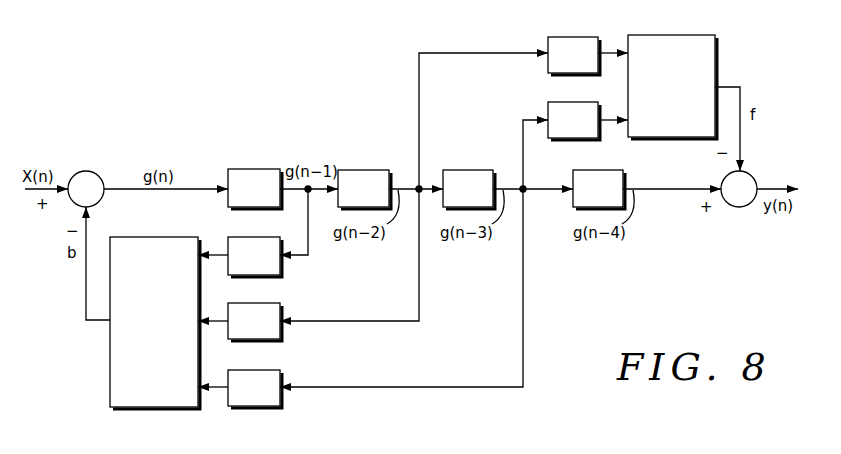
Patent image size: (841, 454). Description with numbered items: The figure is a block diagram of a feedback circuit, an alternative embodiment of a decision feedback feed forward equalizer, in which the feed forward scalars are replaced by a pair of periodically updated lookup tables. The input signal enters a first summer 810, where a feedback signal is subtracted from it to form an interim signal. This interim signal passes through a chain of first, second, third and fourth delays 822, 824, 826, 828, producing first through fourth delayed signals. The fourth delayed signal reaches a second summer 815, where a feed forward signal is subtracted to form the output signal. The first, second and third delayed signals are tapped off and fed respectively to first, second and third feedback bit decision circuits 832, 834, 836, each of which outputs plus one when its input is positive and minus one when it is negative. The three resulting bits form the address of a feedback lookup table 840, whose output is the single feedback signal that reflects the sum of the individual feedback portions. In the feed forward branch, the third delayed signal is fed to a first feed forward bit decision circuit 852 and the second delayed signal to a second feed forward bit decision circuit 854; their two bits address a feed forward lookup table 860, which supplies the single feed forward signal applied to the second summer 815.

The first summer 810 is at (99, 174).
The second summer 815 is at (741, 208).
The first delay 822 is at (246, 169).
The second delay 824 is at (357, 170).
The third delay 826 is at (463, 170).
The fourth delay 828 is at (600, 170).
The first feedback bit decision circuit 832 is at (246, 237).
The second feedback bit decision circuit 834 is at (260, 303).
The third feedback bit decision circuit 836 is at (260, 370).
The feedback lookup table 840 is at (163, 237).
The first feed forward bit decision circuit 852 is at (565, 102).
The second feed forward bit decision circuit 854 is at (565, 37).
The feed forward lookup table 860 is at (683, 35).